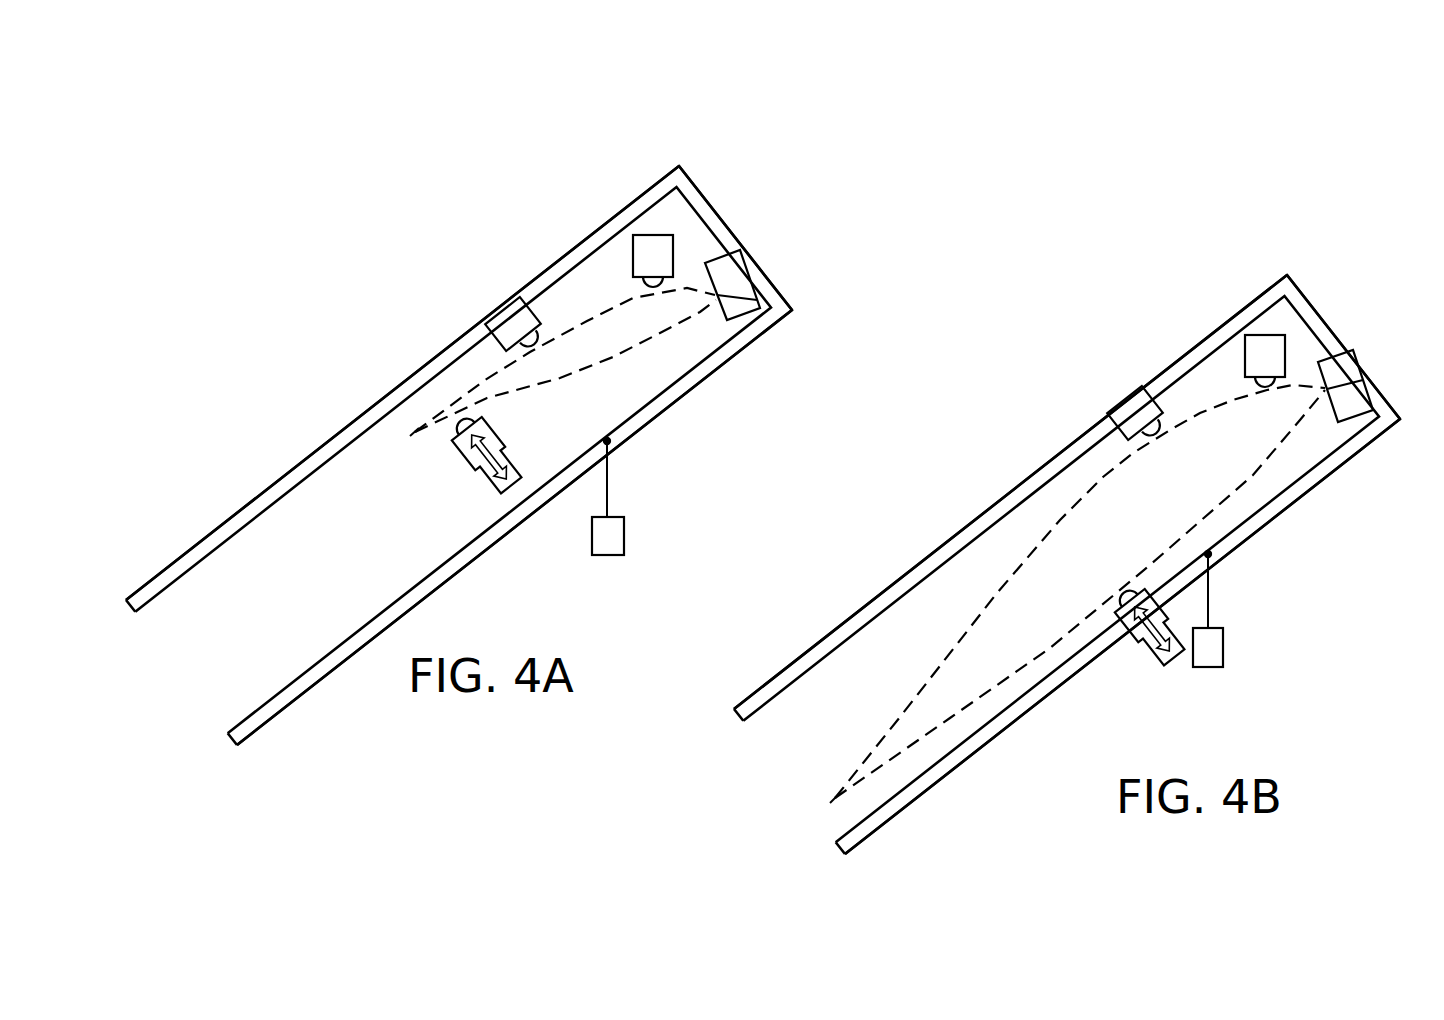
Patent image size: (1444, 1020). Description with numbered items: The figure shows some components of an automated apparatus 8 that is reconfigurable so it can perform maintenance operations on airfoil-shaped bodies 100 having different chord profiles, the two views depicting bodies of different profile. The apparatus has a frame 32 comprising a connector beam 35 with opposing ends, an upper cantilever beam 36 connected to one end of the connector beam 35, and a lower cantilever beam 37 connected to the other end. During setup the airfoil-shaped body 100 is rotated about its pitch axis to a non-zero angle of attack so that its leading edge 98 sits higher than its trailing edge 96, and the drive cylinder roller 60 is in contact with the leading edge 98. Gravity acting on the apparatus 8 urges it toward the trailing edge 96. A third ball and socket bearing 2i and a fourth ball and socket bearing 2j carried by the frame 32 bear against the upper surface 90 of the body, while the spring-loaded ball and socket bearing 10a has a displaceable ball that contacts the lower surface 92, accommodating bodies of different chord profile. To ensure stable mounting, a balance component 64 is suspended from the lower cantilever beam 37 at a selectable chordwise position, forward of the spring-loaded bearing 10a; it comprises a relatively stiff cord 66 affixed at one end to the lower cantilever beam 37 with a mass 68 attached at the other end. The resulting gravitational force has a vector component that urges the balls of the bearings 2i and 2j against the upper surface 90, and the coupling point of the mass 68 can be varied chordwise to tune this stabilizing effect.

In FIG. 4A, the automated apparatus 8 is at (448, 257).
In FIG. 4B, the automated apparatus 8 is at (1120, 327).
In FIG. 4A, the frame 32 is at (343, 421).
In FIG. 4B, the frame 32 is at (1008, 486).
In FIG. 4A, the connector beam 35 is at (706, 200).
In FIG. 4B, the connector beam 35 is at (1306, 300).
In FIG. 4A, the upper cantilever beam 36 is at (602, 226).
In FIG. 4B, the upper cantilever beam 36 is at (1203, 340).
In FIG. 4A, the lower cantilever beam 37 is at (690, 390).
In FIG. 4B, the lower cantilever beam 37 is at (1274, 518).
In FIG. 4A, the third ball and socket bearing 2i is at (496, 303).
In FIG. 4B, the third ball and socket bearing 2i is at (1125, 398).
In FIG. 4A, the fourth ball and socket bearing 2j is at (673, 250).
In FIG. 4B, the fourth ball and socket bearing 2j is at (1285, 352).
In FIG. 4A, the leading edge 98 is at (762, 262).
In FIG. 4B, the leading edge 98 is at (1356, 352).
In FIG. 4A, the drive cylinder roller 60 is at (757, 300).
In FIG. 4B, the drive cylinder roller 60 is at (1368, 385).
In FIG. 4A, the upper surface 90 is at (598, 305).
In FIG. 4B, the upper surface 90 is at (997, 594).
In FIG. 4A, the lower surface 92 is at (560, 378).
In FIG. 4B, the lower surface 92 is at (1264, 470).
In FIG. 4A, the airfoil-shaped body 100 is at (668, 340).
In FIG. 4B, the airfoil-shaped body 100 is at (1085, 488).
In FIG. 4A, the trailing edge 96 is at (413, 436).
In FIG. 4B, the trailing edge 96 is at (832, 800).
In FIG. 4A, the spring-loaded ball and socket bearing 10a is at (508, 485).
In FIG. 4B, the spring-loaded ball and socket bearing 10a is at (1167, 658).
In FIG. 4A, the balance component 64 is at (630, 475).
In FIG. 4B, the balance component 64 is at (1228, 588).
In FIG. 4A, the cord 66 is at (611, 497).
In FIG. 4B, the cord 66 is at (1212, 610).
In FIG. 4A, the mass 68 is at (625, 535).
In FIG. 4B, the mass 68 is at (1225, 650).